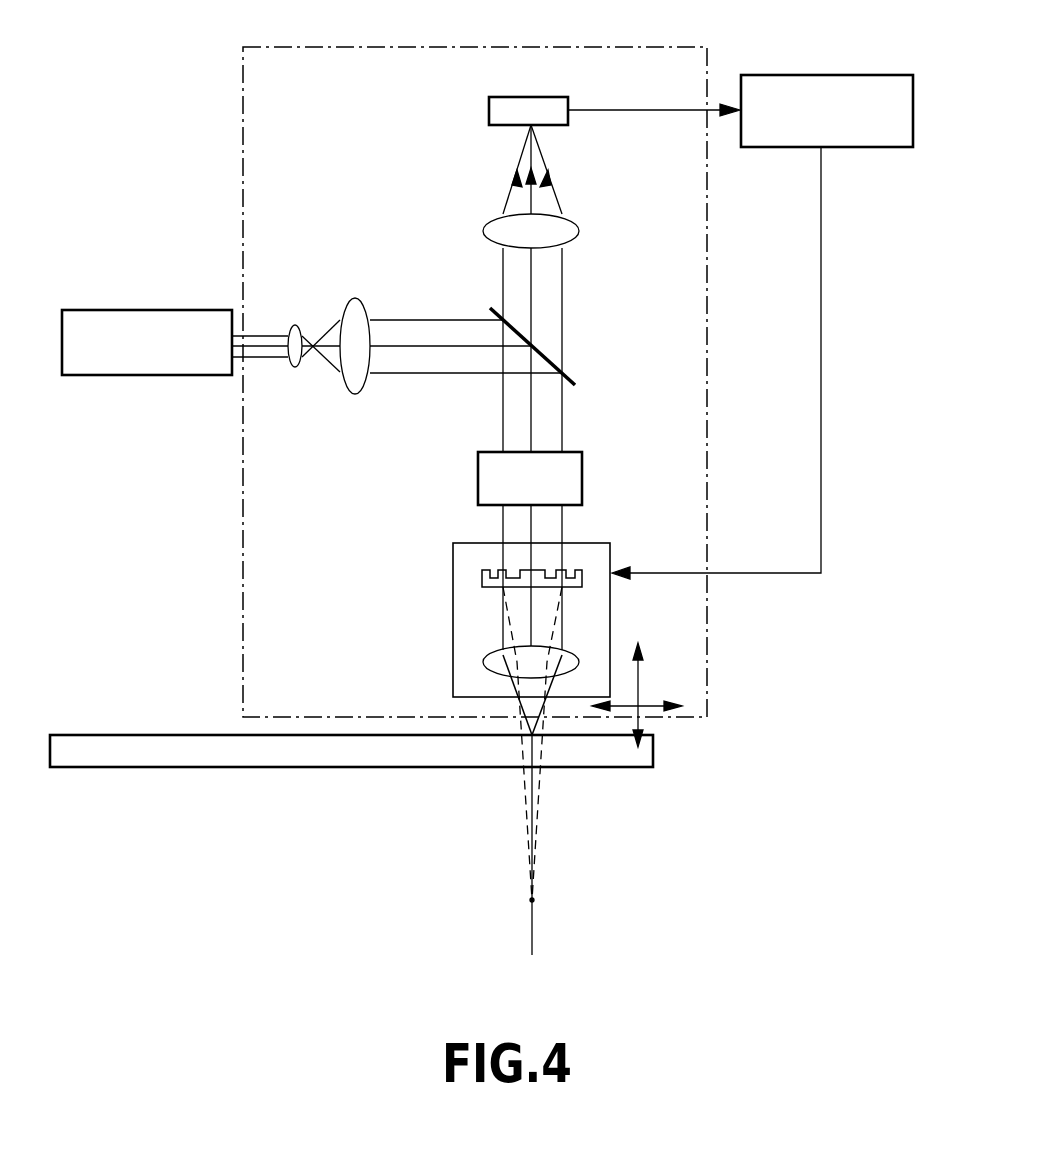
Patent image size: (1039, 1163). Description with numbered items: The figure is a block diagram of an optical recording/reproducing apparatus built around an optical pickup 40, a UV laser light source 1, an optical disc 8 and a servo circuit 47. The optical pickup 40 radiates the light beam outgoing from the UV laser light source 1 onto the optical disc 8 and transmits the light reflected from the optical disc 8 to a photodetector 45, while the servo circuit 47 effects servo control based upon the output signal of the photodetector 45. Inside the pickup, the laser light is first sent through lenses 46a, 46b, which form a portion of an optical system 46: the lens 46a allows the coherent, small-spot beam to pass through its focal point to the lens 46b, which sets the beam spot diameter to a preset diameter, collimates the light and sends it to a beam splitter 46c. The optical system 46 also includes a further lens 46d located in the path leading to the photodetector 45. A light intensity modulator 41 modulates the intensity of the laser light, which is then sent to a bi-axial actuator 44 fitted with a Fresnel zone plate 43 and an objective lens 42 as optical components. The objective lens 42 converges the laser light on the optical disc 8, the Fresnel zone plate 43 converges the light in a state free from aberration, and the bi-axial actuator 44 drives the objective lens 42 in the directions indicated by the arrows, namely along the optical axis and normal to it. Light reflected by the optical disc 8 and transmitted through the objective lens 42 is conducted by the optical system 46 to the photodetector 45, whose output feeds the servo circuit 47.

The UV laser light source 1 is at (130, 310).
The optical disc 8 is at (295, 767).
The optical pickup 40 is at (243, 152).
The light intensity modulator 41 is at (582, 478).
The objective lens 42 is at (483, 662).
The Fresnel zone plate 43 is at (482, 578).
The bi-axial actuator 44 is at (611, 601).
The photodetector 45 is at (548, 97).
The optical system 46 is at (482, 202).
The lens 46a is at (294, 368).
The lens 46b is at (356, 395).
The beam splitter 46c is at (572, 378).
The focusing lens 46d is at (578, 232).
The servo circuit 47 is at (828, 75).